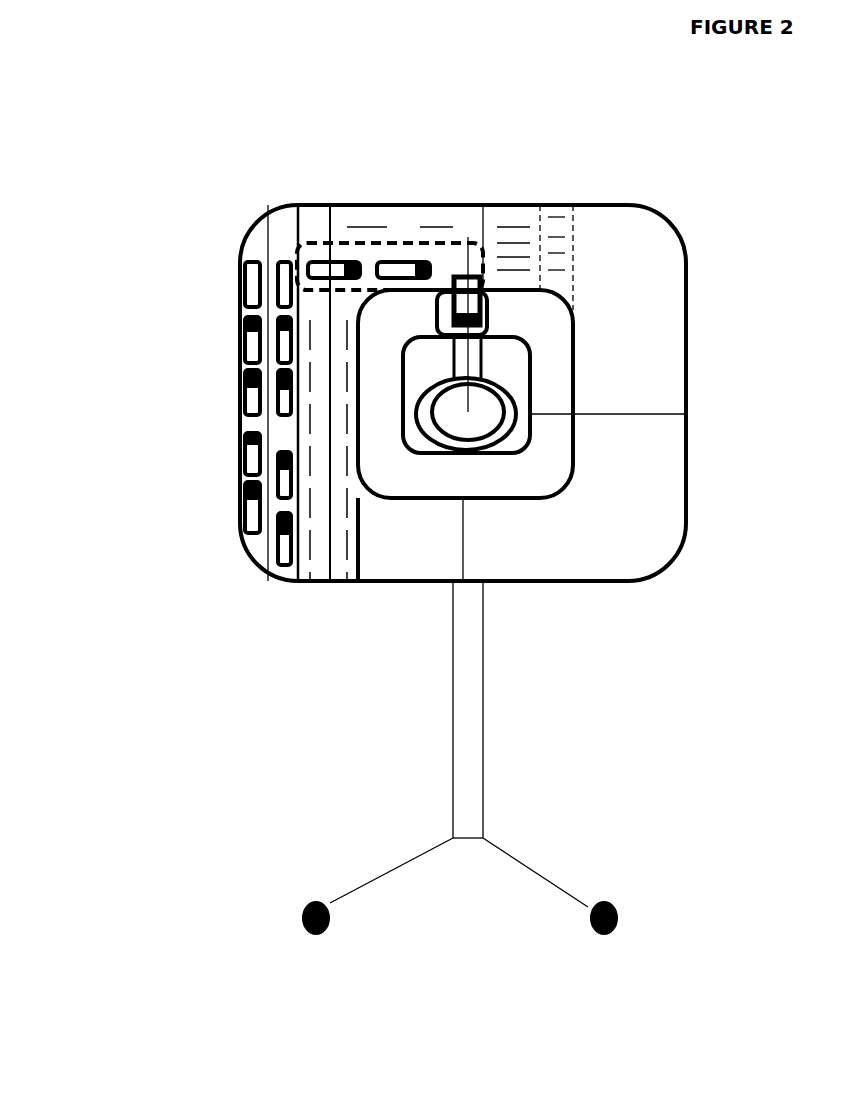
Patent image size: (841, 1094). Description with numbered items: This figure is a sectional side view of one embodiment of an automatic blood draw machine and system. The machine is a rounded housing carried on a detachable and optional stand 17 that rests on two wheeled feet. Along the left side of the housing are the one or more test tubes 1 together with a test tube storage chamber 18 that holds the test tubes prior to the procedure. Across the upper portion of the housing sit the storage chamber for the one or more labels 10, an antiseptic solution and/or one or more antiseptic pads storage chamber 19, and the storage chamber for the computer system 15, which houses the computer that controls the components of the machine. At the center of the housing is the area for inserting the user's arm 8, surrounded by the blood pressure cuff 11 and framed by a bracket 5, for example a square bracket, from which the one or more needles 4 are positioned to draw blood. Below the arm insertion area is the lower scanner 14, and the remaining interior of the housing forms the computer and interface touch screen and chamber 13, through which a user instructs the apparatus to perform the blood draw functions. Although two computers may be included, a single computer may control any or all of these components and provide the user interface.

The test tubes 1 is at (238, 283).
The needles 4 is at (423, 403).
The bracket 5 is at (452, 365).
The area for inserting the user's arm 8 is at (453, 412).
The storage chamber for the labels 10 is at (495, 217).
The blood pressure cuff 11 is at (438, 435).
The computer and interface touch screen and chamber 13 is at (557, 532).
The lower scanner 14 is at (402, 475).
The storage chamber for the computer system 15 is at (617, 277).
The detachable and optional stand 17 is at (452, 688).
The test tube storage chamber 18 is at (258, 252).
The antiseptic solution and/or antiseptic pads storage chamber 19 is at (548, 203).